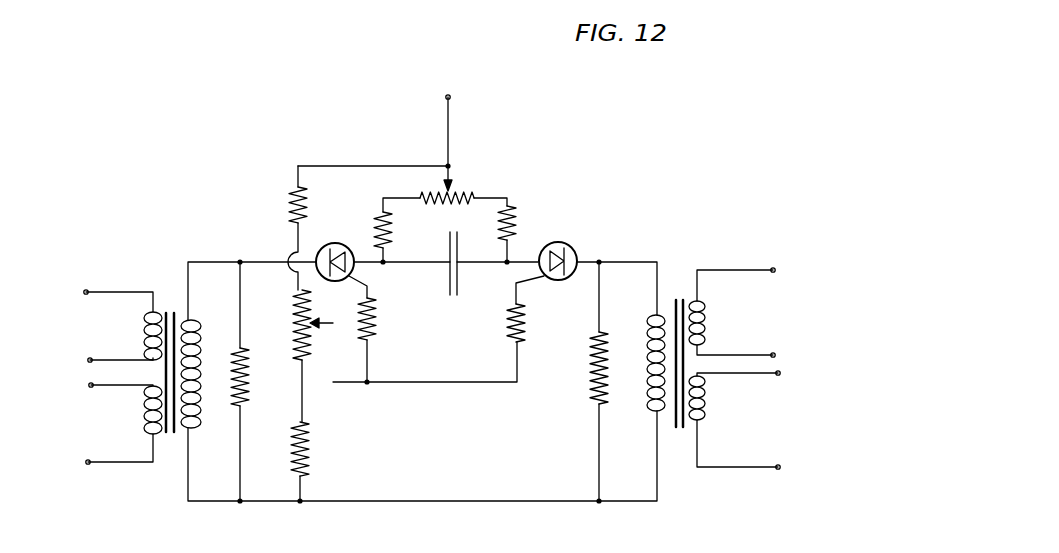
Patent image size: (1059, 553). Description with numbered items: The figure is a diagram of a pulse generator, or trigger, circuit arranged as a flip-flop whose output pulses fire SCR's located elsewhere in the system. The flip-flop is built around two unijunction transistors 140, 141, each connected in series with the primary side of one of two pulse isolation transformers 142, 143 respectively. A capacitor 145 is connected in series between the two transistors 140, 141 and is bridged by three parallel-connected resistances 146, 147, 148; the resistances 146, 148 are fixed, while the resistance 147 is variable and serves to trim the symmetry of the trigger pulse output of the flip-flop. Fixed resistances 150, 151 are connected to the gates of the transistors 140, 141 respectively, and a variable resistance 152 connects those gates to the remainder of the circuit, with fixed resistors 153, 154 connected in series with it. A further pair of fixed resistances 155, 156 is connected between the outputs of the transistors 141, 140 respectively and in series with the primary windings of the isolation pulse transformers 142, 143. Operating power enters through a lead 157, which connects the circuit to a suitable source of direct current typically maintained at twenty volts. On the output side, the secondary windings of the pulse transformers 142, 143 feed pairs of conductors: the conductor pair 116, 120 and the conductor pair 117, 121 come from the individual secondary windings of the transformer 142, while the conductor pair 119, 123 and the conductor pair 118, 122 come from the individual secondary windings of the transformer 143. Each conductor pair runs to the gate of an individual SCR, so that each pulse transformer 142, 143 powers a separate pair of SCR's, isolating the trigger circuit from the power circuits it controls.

The conductor 116 is at (772, 268).
The conductor 117 is at (778, 375).
The conductor 118 is at (89, 385).
The conductor 119 is at (84, 291).
The conductor 120 is at (773, 353).
The conductor 121 is at (777, 466).
The conductor 122 is at (88, 460).
The conductor 123 is at (90, 358).
The unijunction transistor 140 is at (563, 243).
The unijunction transistor 141 is at (339, 243).
The pulse isolation transformer 142 is at (671, 298).
The pulse isolation transformer 143 is at (172, 310).
The capacitor 145 is at (458, 280).
The fixed resistance 146 is at (514, 212).
The variable resistance 147 is at (450, 192).
The fixed resistance 148 is at (390, 214).
The fixed resistance 150 is at (521, 309).
The fixed resistance 151 is at (378, 330).
The variable resistance 152 is at (295, 334).
The fixed resistor 153 is at (308, 466).
The fixed resistor 154 is at (290, 196).
The fixed resistance 155 is at (247, 381).
The fixed resistance 156 is at (590, 366).
The lead 157 is at (452, 109).